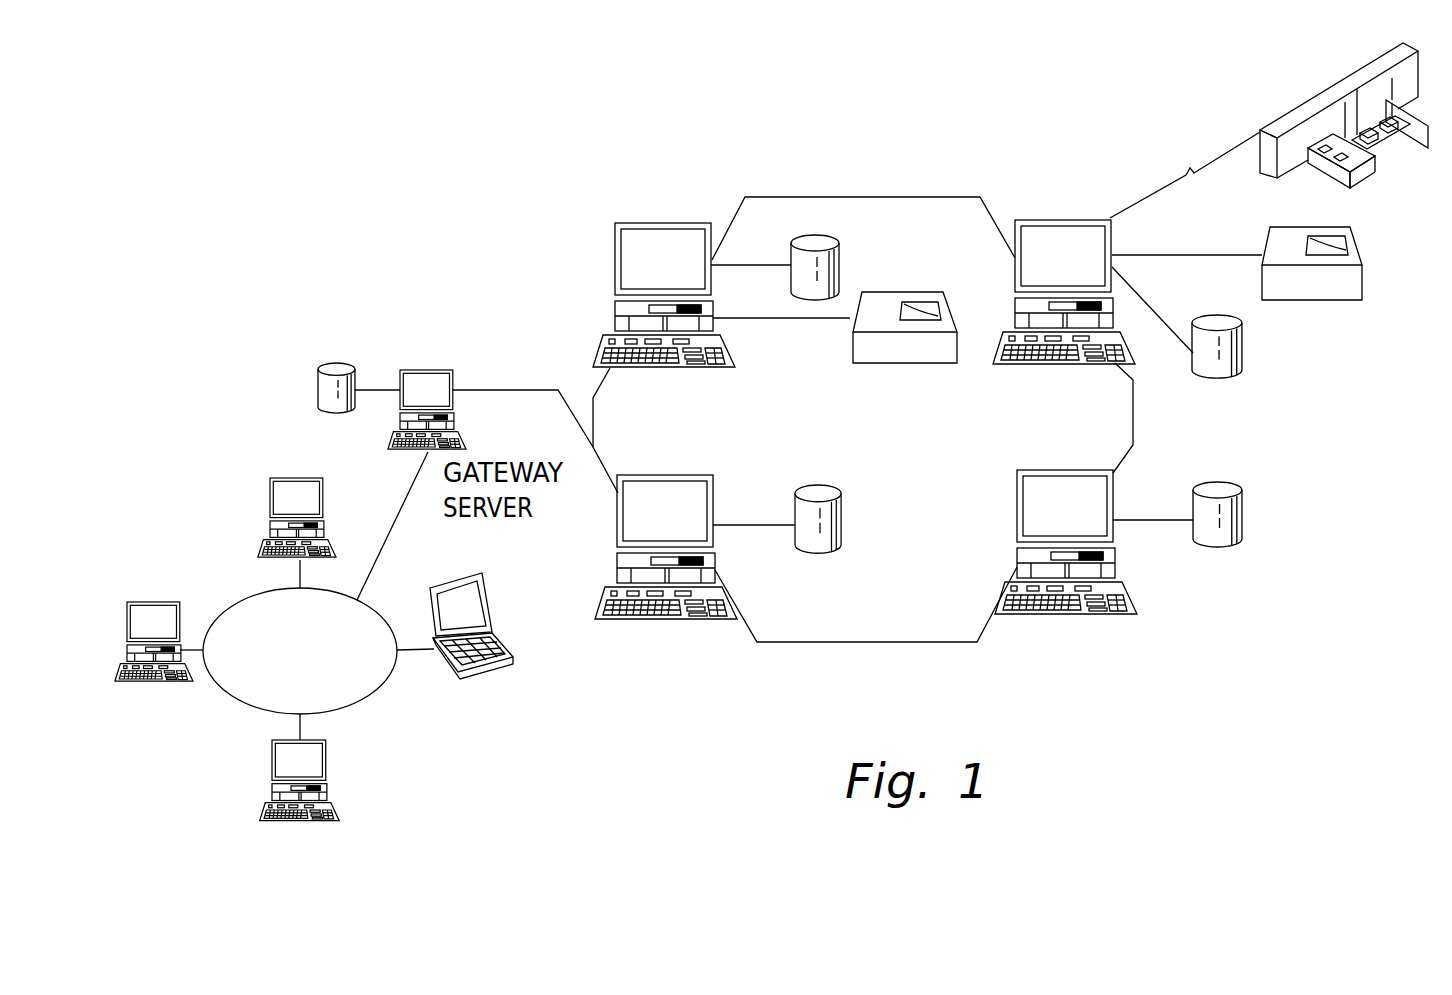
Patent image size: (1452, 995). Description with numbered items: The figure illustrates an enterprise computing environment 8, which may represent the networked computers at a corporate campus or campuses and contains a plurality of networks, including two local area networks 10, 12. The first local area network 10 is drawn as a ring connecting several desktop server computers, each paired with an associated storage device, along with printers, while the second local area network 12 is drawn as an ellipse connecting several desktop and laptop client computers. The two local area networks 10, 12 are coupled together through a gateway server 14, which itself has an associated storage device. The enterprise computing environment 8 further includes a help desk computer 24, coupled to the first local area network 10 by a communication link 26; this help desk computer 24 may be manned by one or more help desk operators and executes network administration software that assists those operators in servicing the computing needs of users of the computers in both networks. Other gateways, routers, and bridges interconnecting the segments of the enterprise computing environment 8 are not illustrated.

The enterprise computing environment 8 is at (865, 150).
The local area network 10 is at (818, 642).
The local area network 12 is at (237, 700).
The gateway server 14 is at (422, 370).
The help desk computer 24 is at (1325, 88).
The communication link 26 is at (1213, 163).